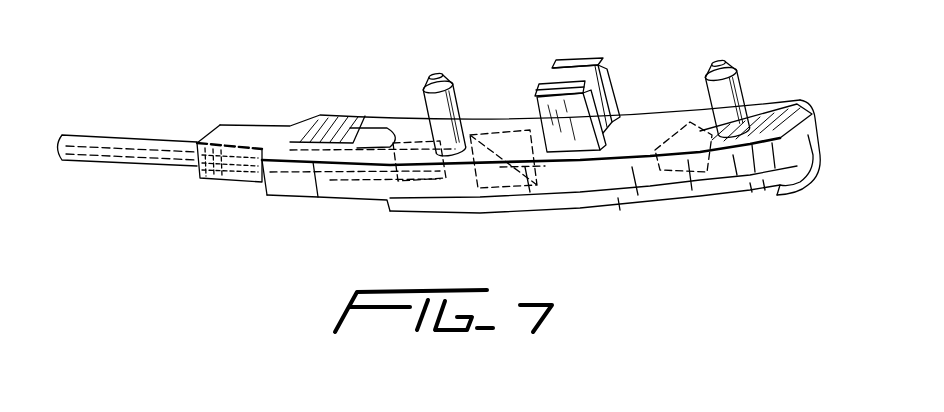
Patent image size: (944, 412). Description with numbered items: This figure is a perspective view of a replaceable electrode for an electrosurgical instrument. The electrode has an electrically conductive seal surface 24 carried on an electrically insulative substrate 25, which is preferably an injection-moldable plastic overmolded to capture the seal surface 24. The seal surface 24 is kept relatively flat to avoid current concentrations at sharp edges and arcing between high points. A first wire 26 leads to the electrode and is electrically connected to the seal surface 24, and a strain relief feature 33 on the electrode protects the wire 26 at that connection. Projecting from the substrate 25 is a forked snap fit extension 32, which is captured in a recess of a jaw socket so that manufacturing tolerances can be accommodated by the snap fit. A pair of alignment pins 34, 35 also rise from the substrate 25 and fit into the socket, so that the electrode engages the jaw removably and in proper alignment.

The electrically conductive seal surface 24 is at (662, 198).
The electrically insulative substrate 25 is at (773, 113).
The first wire 26 is at (152, 141).
The forked snap fit extension 32 is at (587, 62).
The strain relief feature 33 is at (272, 135).
The alignment pin 34 is at (733, 63).
The alignment pin 35 is at (450, 80).